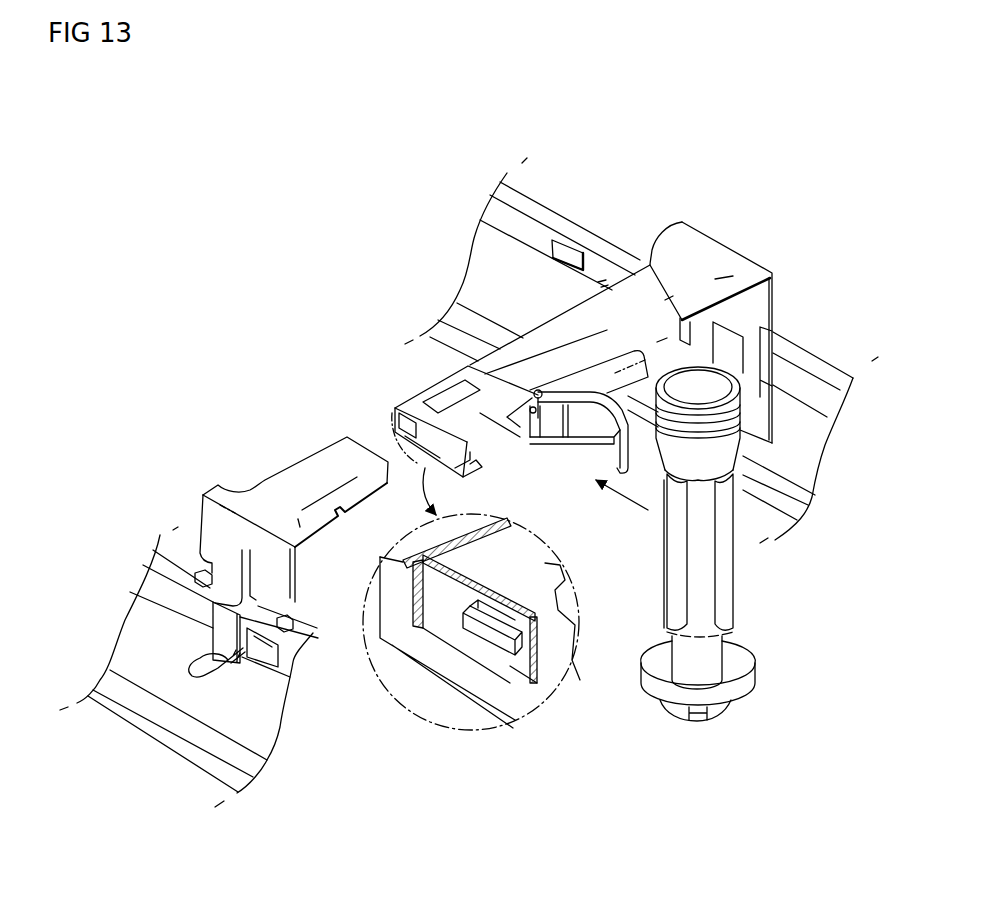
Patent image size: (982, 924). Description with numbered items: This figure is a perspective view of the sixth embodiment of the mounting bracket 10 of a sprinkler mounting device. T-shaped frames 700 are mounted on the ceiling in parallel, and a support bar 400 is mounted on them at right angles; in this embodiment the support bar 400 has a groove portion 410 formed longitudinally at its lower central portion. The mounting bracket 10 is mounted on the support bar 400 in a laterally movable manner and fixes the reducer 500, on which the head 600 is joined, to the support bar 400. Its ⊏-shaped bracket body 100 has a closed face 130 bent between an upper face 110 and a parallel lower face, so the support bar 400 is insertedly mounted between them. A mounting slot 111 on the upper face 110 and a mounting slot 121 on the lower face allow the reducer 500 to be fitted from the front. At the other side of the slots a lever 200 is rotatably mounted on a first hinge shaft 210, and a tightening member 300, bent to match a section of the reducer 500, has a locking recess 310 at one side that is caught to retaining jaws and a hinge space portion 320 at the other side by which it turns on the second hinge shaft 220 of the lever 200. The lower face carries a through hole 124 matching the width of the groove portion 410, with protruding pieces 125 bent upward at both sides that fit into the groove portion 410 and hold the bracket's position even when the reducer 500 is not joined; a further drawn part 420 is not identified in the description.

The mounting bracket 10 is at (424, 378).
The bracket body 100 is at (508, 370).
The upper face 110 is at (455, 398).
The mounting slot 111 is at (503, 420).
The mounting slot 121 is at (513, 443).
The through hole 124 is at (513, 623).
The protruding pieces 125 is at (485, 623).
The closed face 130 is at (392, 410).
The lever 200 is at (602, 428).
The first hinge shaft 210 is at (540, 444).
The second hinge shaft 220 is at (538, 389).
The tightening member 300 is at (615, 383).
The locking recess 310 is at (628, 447).
The hinge space portion 320 is at (566, 418).
The support bar 400 is at (293, 475).
The groove portion 410 is at (443, 630).
The fixing clamp 420 is at (203, 523).
The reducer 500 is at (723, 580).
The head 600 is at (753, 677).
The T-shaped frames 700 is at (820, 373).